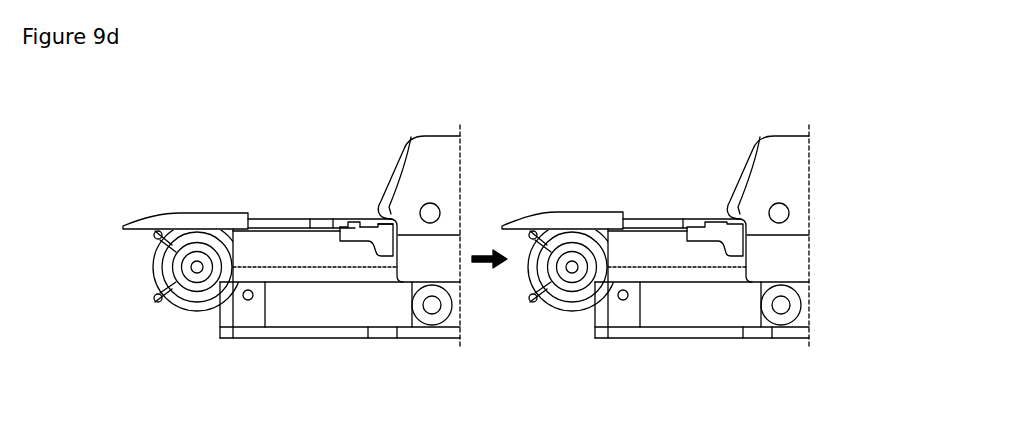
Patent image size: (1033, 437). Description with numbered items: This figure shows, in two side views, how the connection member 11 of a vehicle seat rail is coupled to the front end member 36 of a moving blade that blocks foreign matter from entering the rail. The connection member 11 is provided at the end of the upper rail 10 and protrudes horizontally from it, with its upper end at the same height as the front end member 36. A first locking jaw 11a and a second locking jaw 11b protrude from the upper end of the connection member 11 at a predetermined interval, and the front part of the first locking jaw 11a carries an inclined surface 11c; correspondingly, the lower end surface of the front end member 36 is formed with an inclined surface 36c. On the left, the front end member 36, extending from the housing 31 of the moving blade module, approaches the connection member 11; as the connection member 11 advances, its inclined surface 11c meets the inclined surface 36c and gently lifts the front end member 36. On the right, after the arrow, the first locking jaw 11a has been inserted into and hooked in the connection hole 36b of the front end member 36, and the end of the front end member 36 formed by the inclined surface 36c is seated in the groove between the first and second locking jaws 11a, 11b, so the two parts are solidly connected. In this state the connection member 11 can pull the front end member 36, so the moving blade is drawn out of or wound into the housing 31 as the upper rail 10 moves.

The upper rail 10 is at (447, 156).
The connection member 11 is at (408, 241).
The first locking jaw 11a is at (363, 212).
The second locking jaw 11b is at (410, 136).
The inclined surface 11c is at (349, 222).
The housing 31 is at (187, 306).
The front end member 36 is at (264, 220).
The connection hole 36b is at (320, 218).
The inclined surface 36c is at (338, 220).